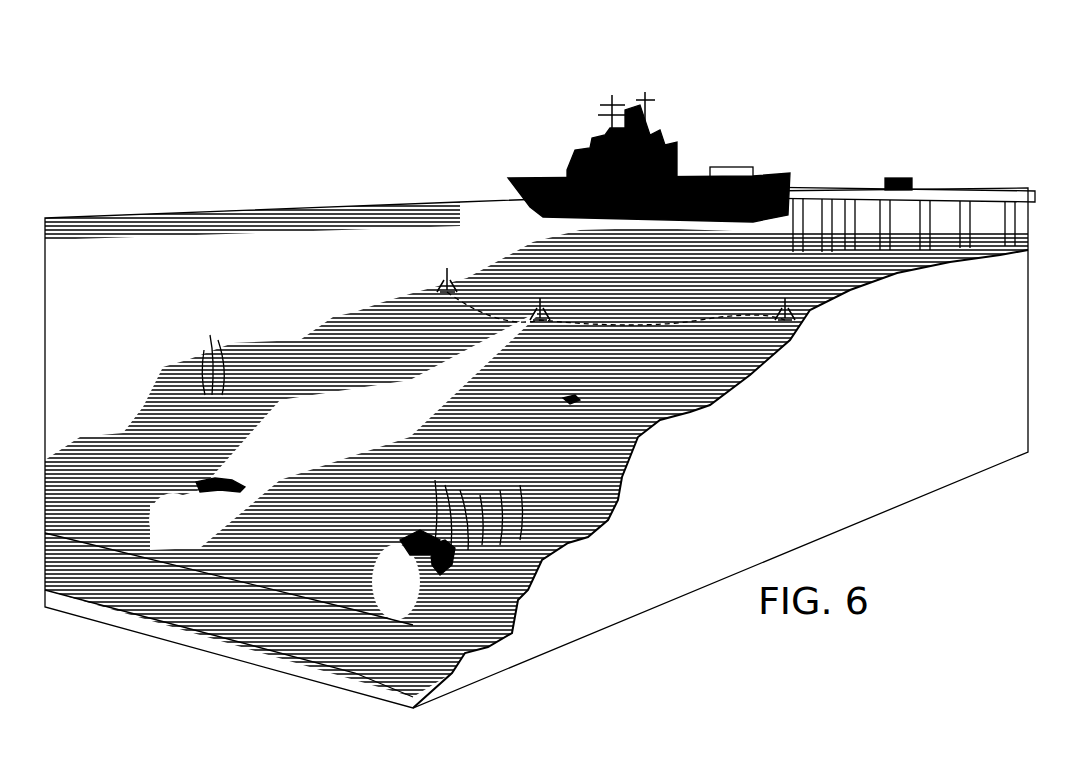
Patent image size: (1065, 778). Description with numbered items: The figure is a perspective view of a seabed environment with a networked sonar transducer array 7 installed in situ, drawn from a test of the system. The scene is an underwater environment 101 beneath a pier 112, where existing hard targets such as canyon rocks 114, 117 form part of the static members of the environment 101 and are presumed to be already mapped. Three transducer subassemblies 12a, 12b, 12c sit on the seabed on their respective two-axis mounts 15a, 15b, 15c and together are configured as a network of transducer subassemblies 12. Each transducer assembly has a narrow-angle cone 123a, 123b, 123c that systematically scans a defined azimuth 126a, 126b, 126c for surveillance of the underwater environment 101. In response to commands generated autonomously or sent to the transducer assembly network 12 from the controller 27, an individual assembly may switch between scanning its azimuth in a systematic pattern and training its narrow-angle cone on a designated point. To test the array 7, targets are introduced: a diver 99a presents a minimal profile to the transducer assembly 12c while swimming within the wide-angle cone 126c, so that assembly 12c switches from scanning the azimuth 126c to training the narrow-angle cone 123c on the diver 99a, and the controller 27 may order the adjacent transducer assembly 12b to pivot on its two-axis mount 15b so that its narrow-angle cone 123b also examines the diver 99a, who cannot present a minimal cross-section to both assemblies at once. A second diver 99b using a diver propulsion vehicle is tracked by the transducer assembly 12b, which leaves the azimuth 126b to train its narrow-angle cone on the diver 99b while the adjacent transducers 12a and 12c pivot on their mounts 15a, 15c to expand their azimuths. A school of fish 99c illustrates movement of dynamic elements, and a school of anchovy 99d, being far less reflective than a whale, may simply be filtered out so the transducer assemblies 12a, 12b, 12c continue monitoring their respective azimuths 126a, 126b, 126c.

The networked sonar transducer array 7 is at (800, 115).
The transducer assembly network 12 is at (692, 327).
The transducer subassembly 12a is at (453, 262).
The transducer subassembly 12b is at (540, 310).
The transducer subassembly 12c is at (785, 315).
The two-axis mount 15a is at (462, 292).
The two-axis mount 15b is at (548, 320).
The two-axis mount 15c is at (792, 318).
The controller 27 is at (896, 178).
The diver 99a is at (455, 543).
The diver 99b is at (240, 480).
The school of fish 99c is at (565, 400).
The school of anchovy 99d is at (208, 395).
The underwater environment 101 is at (143, 306).
The pier 112 is at (820, 190).
The canyon rock 114 is at (433, 480).
The canyon rock 117 is at (413, 545).
The narrow-angle cone 123a is at (105, 387).
The narrow-angle cone 123b is at (193, 522).
The narrow-angle cone 123c is at (415, 604).
The azimuth 126a is at (97, 347).
The azimuth 126b is at (148, 487).
The wide-angle cone 126c is at (540, 451).